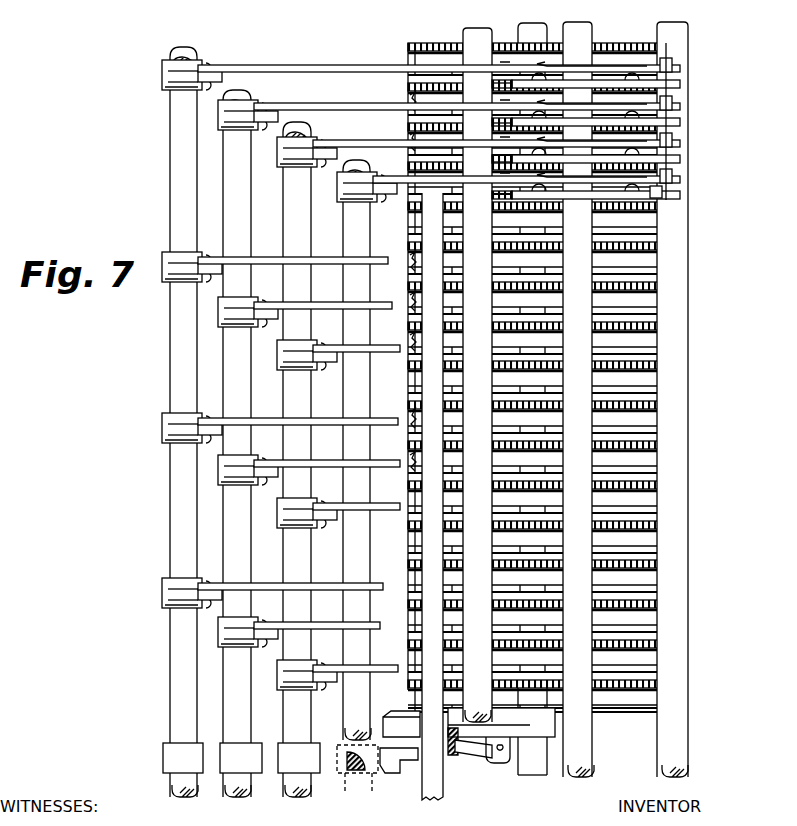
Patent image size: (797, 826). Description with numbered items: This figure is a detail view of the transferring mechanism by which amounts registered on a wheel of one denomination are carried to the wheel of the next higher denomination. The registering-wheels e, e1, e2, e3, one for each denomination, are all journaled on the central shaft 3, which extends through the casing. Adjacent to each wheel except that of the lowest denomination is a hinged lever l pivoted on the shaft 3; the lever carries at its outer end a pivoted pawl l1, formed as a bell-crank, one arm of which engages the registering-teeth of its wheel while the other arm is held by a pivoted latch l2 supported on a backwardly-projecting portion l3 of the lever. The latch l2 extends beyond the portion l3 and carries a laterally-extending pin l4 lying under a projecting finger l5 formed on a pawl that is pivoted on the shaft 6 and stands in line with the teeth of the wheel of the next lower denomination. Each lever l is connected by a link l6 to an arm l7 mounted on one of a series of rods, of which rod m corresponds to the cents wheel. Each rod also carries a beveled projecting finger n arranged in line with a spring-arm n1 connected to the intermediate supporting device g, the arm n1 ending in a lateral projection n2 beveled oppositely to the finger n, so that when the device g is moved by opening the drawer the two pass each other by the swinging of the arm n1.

The arm l7 is at (168, 92).
The link l6 is at (320, 65).
The registering-wheel e is at (405, 542).
The registering-wheel e1 is at (403, 337).
The registering-wheel e2 is at (403, 298).
The registering-wheel e3 is at (402, 256).
The pivoted pawl l1 is at (488, 198).
The hinged lever l is at (560, 185).
The pivoted latch l2 is at (682, 85).
The backwardly-projecting portion l3 is at (690, 190).
The laterally-extending pin l4 is at (672, 70).
The projecting finger l5 is at (683, 64).
The shaft m is at (175, 523).
The projecting finger n is at (170, 762).
The spring-arm n1 is at (478, 752).
The lateral projection n2 is at (402, 763).
The intermediate supporting device g is at (398, 718).
The central shaft 3 is at (540, 770).
The shaft 6 is at (590, 760).